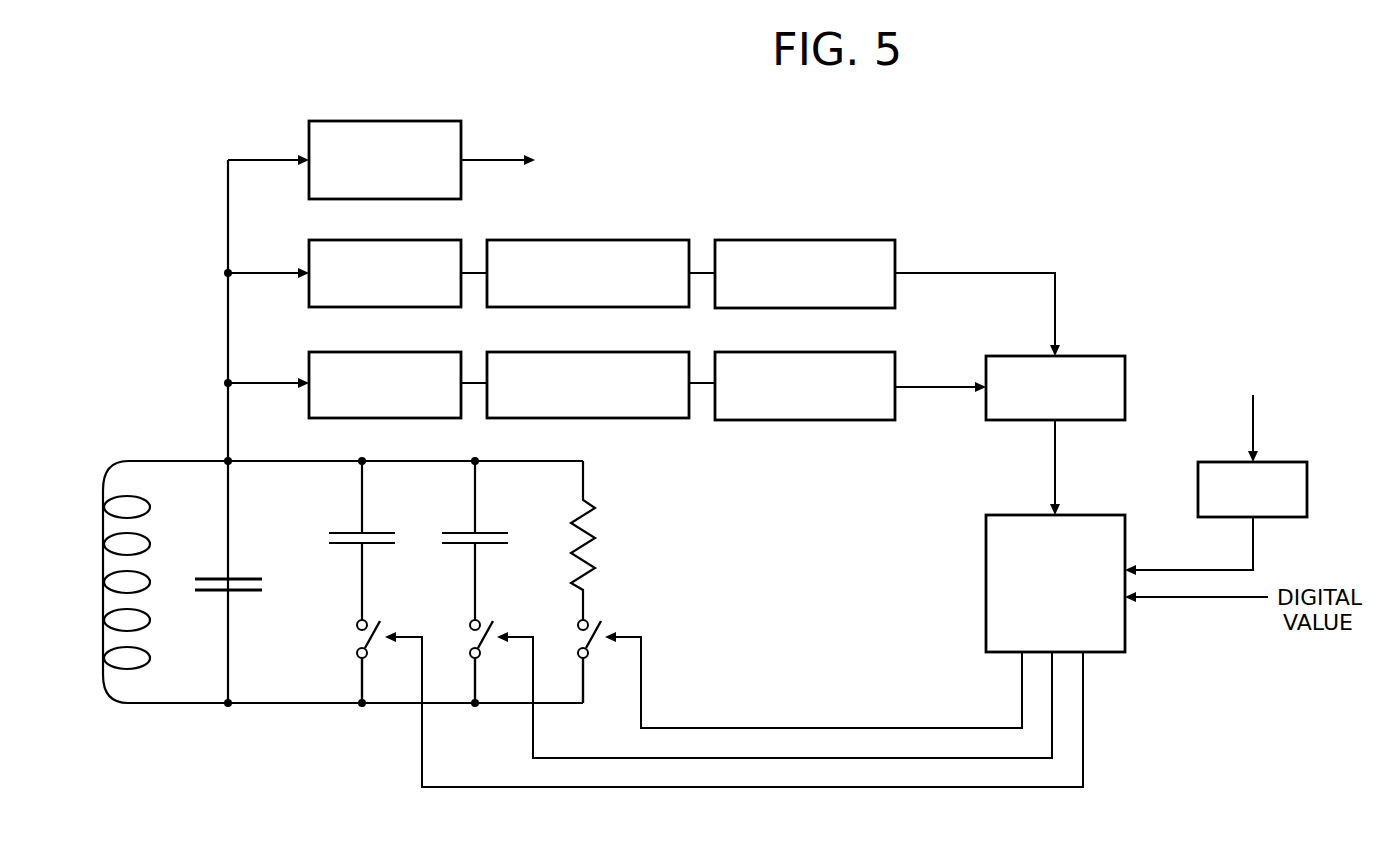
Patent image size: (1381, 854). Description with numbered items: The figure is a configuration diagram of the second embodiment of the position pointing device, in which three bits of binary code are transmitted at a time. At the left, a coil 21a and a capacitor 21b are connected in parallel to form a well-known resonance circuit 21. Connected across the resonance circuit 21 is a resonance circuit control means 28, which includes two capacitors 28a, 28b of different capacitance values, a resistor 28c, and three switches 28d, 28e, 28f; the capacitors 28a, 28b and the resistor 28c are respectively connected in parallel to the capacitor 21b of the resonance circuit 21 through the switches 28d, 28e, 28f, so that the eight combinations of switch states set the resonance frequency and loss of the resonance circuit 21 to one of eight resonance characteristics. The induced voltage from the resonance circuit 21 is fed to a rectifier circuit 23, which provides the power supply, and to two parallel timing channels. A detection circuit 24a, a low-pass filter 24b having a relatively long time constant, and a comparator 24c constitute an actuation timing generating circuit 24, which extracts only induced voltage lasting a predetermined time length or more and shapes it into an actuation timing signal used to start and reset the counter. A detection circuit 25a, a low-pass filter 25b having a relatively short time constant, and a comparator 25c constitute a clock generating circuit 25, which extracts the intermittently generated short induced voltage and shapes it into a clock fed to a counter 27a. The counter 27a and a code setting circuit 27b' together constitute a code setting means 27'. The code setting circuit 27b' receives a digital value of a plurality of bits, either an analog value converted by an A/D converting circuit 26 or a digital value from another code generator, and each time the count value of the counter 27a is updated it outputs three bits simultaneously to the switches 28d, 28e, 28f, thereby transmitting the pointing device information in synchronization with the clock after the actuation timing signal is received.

The resonance circuit 21 is at (171, 537).
The coil 21a is at (127, 460).
The capacitor 21b is at (218, 578).
The rectifier circuit 23 is at (440, 121).
The actuation timing generating circuit 24 is at (728, 271).
The detection circuit 24a is at (376, 214).
The low-pass filter 24b is at (565, 240).
The comparator 24c is at (782, 240).
The clock generating circuit 25 is at (607, 403).
The detection circuit 25a is at (375, 352).
The low-pass filter 25b is at (562, 352).
The comparator 25c is at (772, 352).
The A/D converting circuit 26 is at (1307, 500).
The code setting means 27' is at (1037, 548).
The counter 27a is at (1006, 420).
The code setting circuit 27b' is at (1017, 583).
The resonance circuit control means 28 is at (671, 624).
The capacitor 28a is at (349, 530).
The capacitor 28b is at (462, 530).
The resistor 28c is at (575, 556).
The switch 28d is at (355, 640).
The switch 28e is at (470, 645).
The switch 28f is at (580, 648).